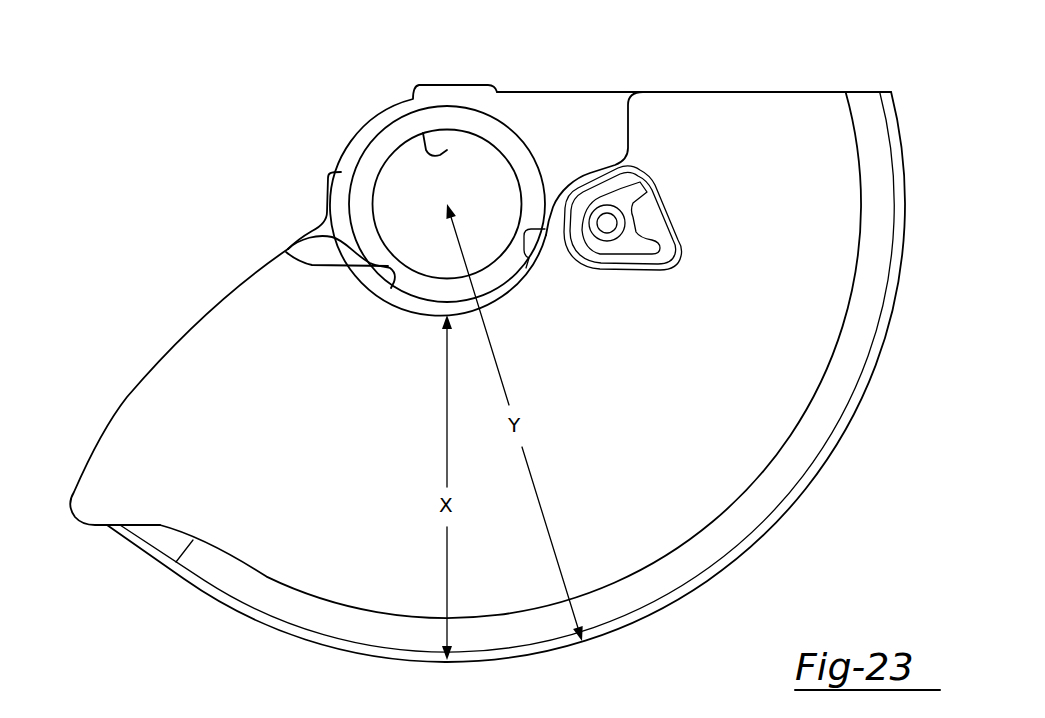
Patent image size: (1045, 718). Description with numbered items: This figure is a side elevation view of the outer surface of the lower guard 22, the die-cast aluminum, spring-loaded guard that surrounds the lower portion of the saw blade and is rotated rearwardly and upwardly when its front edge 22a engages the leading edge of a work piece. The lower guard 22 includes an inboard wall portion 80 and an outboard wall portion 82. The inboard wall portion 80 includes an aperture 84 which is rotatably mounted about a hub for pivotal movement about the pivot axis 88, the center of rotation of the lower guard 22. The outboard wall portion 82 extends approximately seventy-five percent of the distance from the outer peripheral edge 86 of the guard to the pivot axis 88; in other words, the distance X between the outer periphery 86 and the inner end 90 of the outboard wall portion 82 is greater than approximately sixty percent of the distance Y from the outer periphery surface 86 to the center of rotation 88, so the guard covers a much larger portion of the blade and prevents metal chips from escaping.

The lower guard 22 is at (165, 606).
The front edge 22a is at (127, 397).
The inboard wall portion 80 is at (590, 120).
The outboard wall portion 82 is at (778, 108).
The aperture 84 is at (447, 150).
The outer peripheral edge 86 is at (544, 654).
The pivot axis 88 is at (343, 172).
The inner end 90 is at (292, 254).